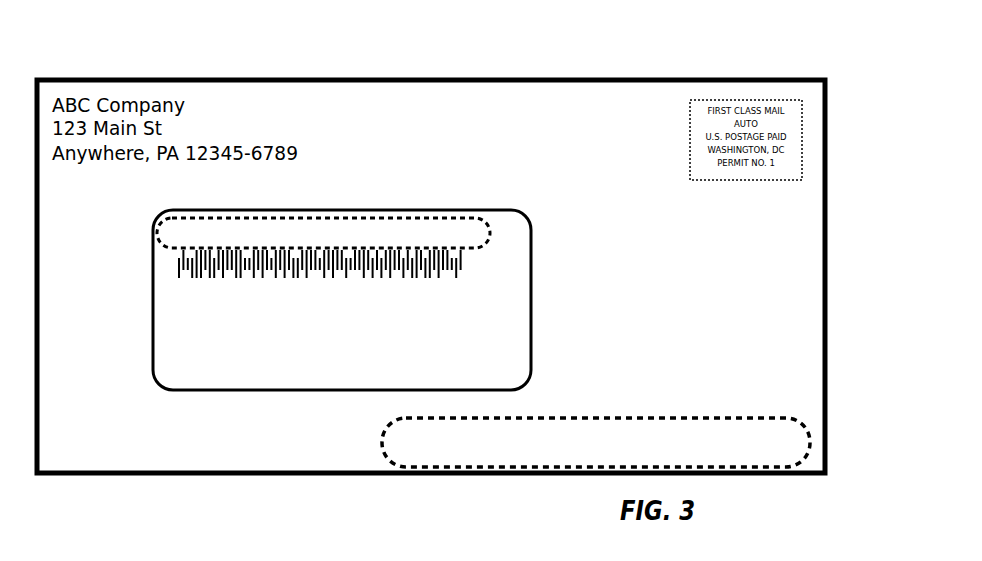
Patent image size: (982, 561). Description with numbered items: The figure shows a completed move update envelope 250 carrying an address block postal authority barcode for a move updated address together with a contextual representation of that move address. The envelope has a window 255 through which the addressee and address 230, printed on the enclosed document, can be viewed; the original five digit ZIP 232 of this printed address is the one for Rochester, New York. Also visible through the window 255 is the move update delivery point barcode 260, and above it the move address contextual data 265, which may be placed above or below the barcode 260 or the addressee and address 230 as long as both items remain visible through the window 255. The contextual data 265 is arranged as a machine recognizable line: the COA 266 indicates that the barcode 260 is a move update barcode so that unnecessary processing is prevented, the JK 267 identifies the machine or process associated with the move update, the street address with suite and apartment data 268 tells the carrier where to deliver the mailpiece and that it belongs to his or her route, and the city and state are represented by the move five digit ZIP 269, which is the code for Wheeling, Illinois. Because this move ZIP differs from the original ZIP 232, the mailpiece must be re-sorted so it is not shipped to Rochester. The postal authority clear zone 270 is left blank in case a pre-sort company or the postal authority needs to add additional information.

The move update envelope 250 is at (432, 73).
The window 255 is at (410, 207).
The move address contextual data 265 is at (158, 230).
The COA 266 is at (195, 225).
The JK 267 is at (243, 227).
The street address with suite and apartment data 268 is at (323, 227).
The move 5 digit ZIP 269 is at (477, 232).
The move update delivery point barcode 260 is at (462, 267).
The addressee and address 230 is at (180, 332).
The original 5 digit ZIP 232 is at (360, 377).
The postal authority clear zone 270 is at (618, 418).